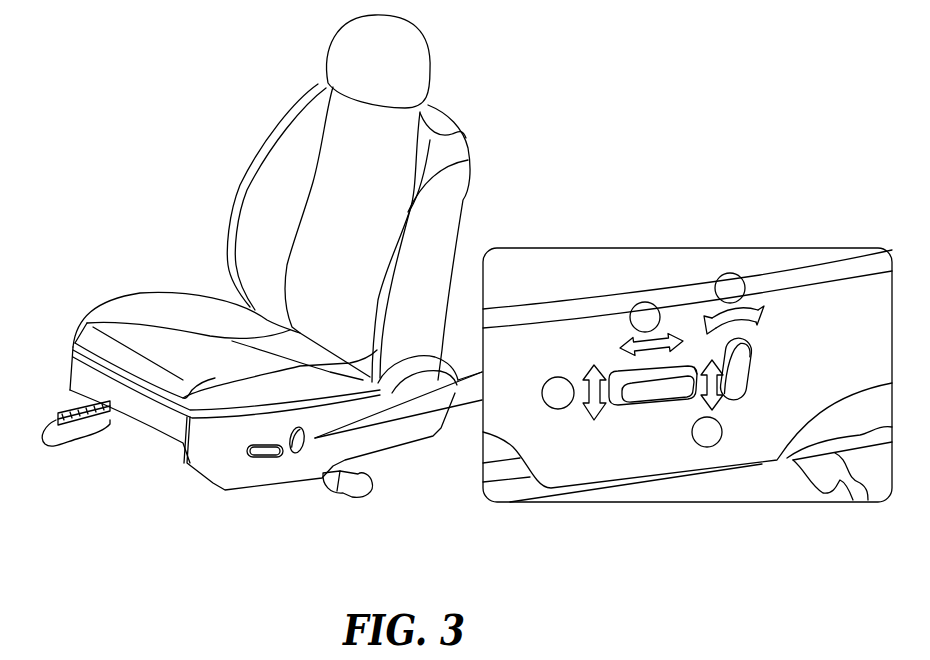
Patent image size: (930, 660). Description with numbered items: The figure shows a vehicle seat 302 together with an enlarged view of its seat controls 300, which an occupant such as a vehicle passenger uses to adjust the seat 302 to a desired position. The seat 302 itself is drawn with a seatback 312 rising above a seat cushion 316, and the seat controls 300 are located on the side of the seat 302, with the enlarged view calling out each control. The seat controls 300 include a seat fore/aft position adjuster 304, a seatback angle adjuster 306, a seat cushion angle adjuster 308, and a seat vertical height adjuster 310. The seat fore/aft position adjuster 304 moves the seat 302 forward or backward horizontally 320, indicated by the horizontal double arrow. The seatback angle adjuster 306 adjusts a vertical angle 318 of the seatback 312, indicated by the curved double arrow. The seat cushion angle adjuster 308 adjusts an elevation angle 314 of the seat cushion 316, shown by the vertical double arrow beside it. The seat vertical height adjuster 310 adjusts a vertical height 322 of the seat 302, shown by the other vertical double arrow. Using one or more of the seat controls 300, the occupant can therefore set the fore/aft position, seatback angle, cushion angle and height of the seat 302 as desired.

The seat controls 300 is at (788, 355).
The seat 302 is at (134, 258).
The seat fore/aft position adjuster 304 is at (650, 410).
The seatback angle adjuster 306 is at (740, 383).
The seat cushion angle adjuster 308 is at (617, 403).
The seat vertical height adjuster 310 is at (692, 365).
The seatback 312 is at (333, 222).
The elevation angle 314 is at (587, 378).
The seat cushion 316 is at (90, 340).
The vertical angle 318 is at (757, 318).
The horizontal fore/aft movement 320 is at (630, 343).
The vertical height 322 is at (728, 398).